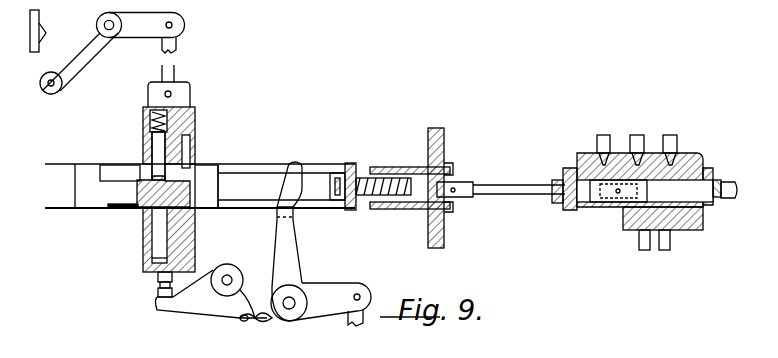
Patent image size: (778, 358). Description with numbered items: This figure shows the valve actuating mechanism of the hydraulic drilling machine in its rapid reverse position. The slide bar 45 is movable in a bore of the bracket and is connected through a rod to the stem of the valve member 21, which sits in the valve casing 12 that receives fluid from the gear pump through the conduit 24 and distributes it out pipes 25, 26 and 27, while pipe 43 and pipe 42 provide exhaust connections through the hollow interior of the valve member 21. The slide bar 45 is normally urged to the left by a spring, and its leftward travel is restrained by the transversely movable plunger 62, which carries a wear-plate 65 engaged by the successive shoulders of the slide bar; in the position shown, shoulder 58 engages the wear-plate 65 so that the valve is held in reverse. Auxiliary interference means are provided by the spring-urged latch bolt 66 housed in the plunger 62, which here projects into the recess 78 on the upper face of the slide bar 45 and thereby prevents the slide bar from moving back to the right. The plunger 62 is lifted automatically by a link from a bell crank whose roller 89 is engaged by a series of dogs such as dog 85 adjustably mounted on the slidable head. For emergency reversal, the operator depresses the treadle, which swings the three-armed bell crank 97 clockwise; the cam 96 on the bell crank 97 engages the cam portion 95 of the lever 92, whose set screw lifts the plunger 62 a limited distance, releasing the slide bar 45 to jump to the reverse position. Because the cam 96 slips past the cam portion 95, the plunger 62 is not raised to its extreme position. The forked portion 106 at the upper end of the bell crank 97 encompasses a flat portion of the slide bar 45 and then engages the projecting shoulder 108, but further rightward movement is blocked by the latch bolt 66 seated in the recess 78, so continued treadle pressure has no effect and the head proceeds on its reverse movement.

The dog 85 is at (43, 26).
The roller 89 is at (60, 93).
The latch bolt 66 is at (157, 152).
The wear-plate 65 is at (188, 152).
The recess 78 is at (177, 172).
The shoulder 58 is at (207, 186).
The plunger 62 is at (145, 238).
The slide bar 45 is at (273, 164).
The forked portion 106 is at (308, 160).
The shoulder 108 is at (331, 173).
The bell crank 97 is at (303, 256).
The cam 96 is at (267, 320).
The lever 92 is at (199, 315).
The cam portion 95 is at (240, 316).
The valve housing 12 is at (562, 217).
The valve member 21 is at (597, 210).
The pipe 43 is at (597, 140).
The conduit 24 is at (640, 148).
The pipe 25 is at (677, 153).
The pipe 27 is at (640, 240).
The pipe 26 is at (671, 238).
The pipe 42 is at (733, 198).